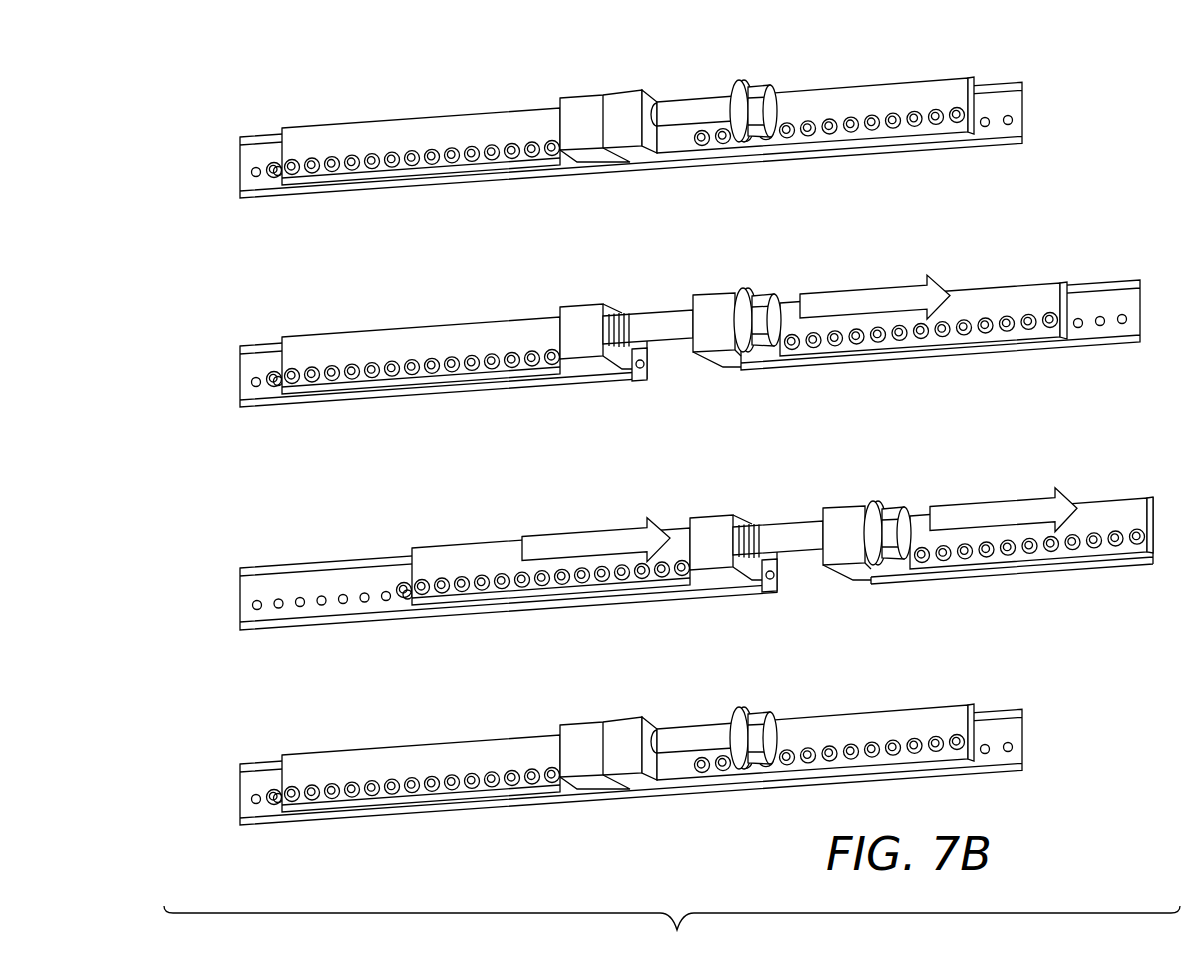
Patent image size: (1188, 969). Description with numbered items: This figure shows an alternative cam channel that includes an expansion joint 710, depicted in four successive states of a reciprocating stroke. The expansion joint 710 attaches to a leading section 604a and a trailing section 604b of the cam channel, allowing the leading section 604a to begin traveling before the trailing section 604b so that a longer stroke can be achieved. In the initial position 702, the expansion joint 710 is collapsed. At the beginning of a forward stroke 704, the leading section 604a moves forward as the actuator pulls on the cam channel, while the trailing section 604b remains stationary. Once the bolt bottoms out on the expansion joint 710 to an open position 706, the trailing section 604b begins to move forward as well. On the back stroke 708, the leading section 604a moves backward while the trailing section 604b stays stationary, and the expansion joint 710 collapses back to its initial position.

The initial position 702 is at (570, 107).
The beginning of a forward stroke 704 is at (629, 341).
The open position 706 is at (635, 559).
The back stroke 708 is at (570, 764).
The expansion joint 710 is at (591, 97).
The leading section 604a is at (880, 84).
The trailing section 604b is at (382, 121).